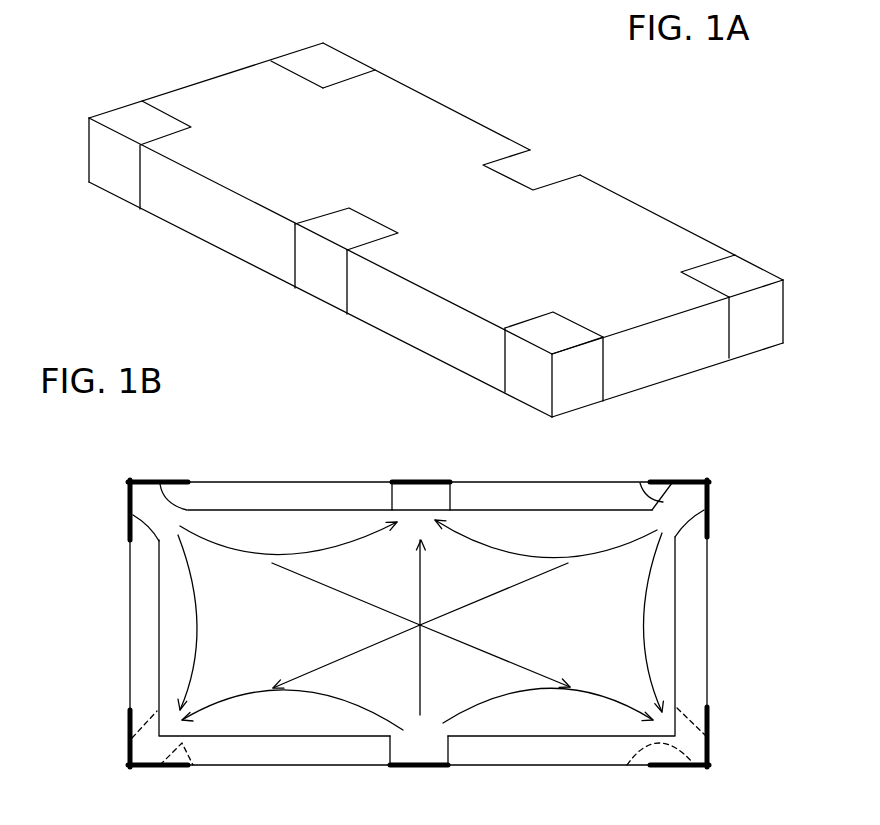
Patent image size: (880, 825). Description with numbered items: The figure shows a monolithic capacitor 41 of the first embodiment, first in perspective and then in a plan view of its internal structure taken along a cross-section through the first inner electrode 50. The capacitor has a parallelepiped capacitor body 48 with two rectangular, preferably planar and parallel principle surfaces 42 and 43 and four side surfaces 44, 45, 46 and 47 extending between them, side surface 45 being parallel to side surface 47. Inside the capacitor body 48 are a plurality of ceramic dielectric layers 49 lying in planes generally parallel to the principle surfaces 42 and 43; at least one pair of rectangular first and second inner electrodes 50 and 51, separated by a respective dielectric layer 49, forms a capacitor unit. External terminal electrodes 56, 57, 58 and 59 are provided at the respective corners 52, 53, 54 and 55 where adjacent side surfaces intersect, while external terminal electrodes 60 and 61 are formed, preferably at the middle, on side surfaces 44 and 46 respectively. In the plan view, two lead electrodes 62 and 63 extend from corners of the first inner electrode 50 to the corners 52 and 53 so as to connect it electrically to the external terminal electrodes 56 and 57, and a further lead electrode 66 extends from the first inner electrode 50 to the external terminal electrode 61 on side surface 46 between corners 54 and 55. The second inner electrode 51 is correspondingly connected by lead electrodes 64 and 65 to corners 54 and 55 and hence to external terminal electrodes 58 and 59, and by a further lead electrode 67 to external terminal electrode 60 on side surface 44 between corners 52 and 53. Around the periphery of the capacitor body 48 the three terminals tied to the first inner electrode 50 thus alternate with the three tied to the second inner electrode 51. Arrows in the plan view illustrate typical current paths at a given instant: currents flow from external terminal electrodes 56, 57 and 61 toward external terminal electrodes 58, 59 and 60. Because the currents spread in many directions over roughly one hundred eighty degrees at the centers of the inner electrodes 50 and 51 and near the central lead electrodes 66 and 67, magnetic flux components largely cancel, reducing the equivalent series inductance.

In FIG. 1A, the monolithic capacitor 41 is at (182, 38).
In FIG. 1B, the monolithic capacitor 41 is at (82, 431).
In FIG. 1A, the principle surface 42 is at (420, 118).
In FIG. 1A, the principle surface 43 is at (655, 368).
In FIG. 1A, the side surface 44 is at (665, 236).
In FIG. 1B, the side surface 44 is at (274, 485).
In FIG. 1A, the side surface 45 is at (712, 355).
In FIG. 1B, the side surface 45 is at (707, 622).
In FIG. 1A, the side surface 46 is at (215, 237).
In FIG. 1B, the side surface 46 is at (307, 768).
In FIG. 1A, the side surface 47 is at (222, 92).
In FIG. 1B, the side surface 47 is at (130, 582).
In FIG. 1A, the capacitor body 48 is at (490, 125).
In FIG. 1B, the capacitor body 48 is at (570, 482).
In FIG. 1B, the dielectric layer 49 is at (518, 493).
In FIG. 1B, the first inner electrode 50 is at (678, 577).
In FIG. 1B, the second inner electrode 51 is at (452, 502).
In FIG. 1A, the corner 52 is at (323, 42).
In FIG. 1B, the corner 52 is at (137, 485).
In FIG. 1A, the corner 53 is at (786, 300).
In FIG. 1B, the corner 53 is at (698, 488).
In FIG. 1A, the corner 54 is at (548, 397).
In FIG. 1B, the corner 54 is at (697, 767).
In FIG. 1A, the corner 55 is at (88, 140).
In FIG. 1B, the corner 55 is at (136, 768).
In FIG. 1A, the external terminal electrode 56 is at (303, 57).
In FIG. 1B, the external terminal electrode 56 is at (128, 518).
In FIG. 1A, the external terminal electrode 57 is at (768, 338).
In FIG. 1B, the external terminal electrode 57 is at (709, 502).
In FIG. 1A, the external terminal electrode 58 is at (572, 395).
In FIG. 1B, the external terminal electrode 58 is at (709, 727).
In FIG. 1A, the external terminal electrode 59 is at (102, 180).
In FIG. 1B, the external terminal electrode 59 is at (128, 752).
In FIG. 1A, the external terminal electrode 60 is at (548, 170).
In FIG. 1B, the external terminal electrode 60 is at (415, 482).
In FIG. 1A, the external terminal electrode 61 is at (318, 288).
In FIG. 1B, the external terminal electrode 61 is at (416, 768).
In FIG. 1B, the lead electrode 62 is at (165, 503).
In FIG. 1B, the lead electrode 63 is at (640, 482).
In FIG. 1B, the lead electrode 64 is at (627, 766).
In FIG. 1B, the lead electrode 65 is at (193, 765).
In FIG. 1B, the lead electrode 66 is at (443, 748).
In FIG. 1B, the lead electrode 67 is at (388, 497).